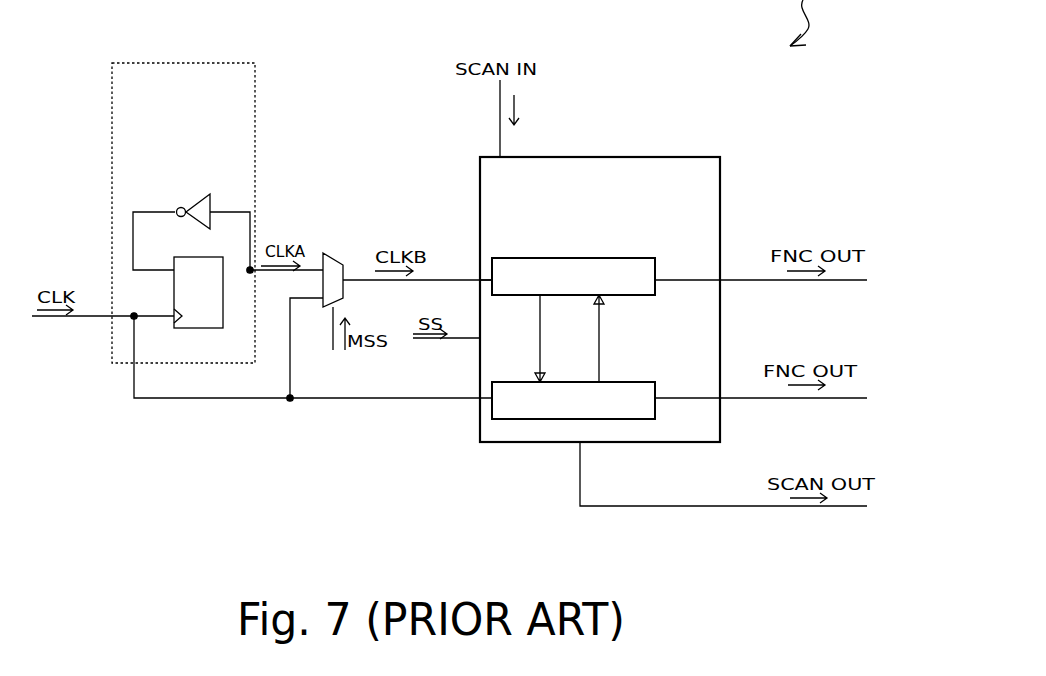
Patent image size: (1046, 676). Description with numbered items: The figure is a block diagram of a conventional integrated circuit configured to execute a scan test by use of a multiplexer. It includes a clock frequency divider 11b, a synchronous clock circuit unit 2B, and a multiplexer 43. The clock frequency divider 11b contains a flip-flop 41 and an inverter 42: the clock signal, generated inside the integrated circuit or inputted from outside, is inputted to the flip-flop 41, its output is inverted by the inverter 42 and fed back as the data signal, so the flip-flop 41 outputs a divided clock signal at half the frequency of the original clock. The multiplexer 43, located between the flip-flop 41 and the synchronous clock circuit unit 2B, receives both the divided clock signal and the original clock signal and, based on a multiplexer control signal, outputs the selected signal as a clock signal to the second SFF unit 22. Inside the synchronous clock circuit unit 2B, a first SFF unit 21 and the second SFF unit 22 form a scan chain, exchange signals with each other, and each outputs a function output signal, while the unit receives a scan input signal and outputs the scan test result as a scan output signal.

The clock frequency divider 11b is at (255, 80).
The inverter 42 is at (210, 200).
The flip-flop 41 is at (212, 257).
The multiplexer 43 is at (337, 255).
The synchronous clock circuit unit 2B is at (622, 157).
The second SFF unit 22 is at (655, 262).
The first SFF unit 21 is at (655, 386).